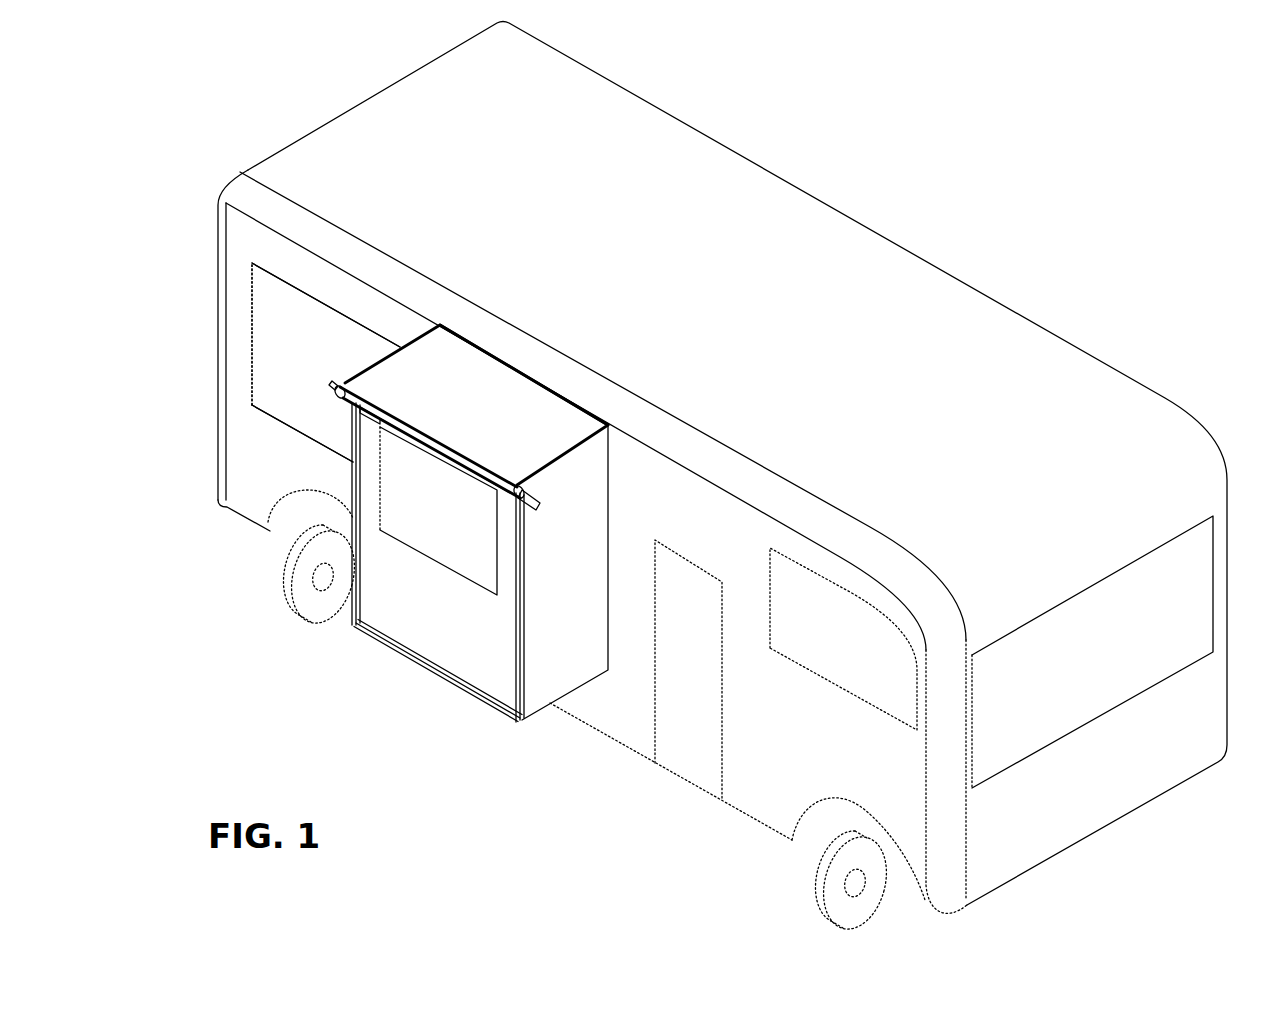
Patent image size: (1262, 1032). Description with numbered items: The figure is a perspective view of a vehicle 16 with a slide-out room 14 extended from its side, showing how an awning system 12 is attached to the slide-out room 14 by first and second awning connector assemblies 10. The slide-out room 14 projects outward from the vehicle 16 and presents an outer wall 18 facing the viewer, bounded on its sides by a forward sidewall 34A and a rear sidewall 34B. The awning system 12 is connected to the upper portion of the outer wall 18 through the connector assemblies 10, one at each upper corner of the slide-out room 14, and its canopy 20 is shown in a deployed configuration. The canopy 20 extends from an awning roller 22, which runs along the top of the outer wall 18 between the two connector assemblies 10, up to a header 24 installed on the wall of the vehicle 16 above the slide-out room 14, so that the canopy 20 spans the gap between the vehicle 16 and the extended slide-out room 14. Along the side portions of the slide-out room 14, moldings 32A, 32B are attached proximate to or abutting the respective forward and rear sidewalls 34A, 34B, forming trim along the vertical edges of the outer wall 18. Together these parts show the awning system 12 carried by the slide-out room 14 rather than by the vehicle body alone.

The awning connector assembly 10 is at (438, 369).
The awning system 12 is at (318, 396).
The slide-out room 14 is at (477, 569).
The vehicle 16 is at (968, 317).
The outer wall 18 is at (438, 530).
The canopy 20 is at (410, 366).
The awning roller 22 is at (485, 472).
The header 24 is at (607, 420).
The molding 32A is at (527, 636).
The molding 32B is at (357, 533).
The forward sidewall 34A is at (555, 573).
The rear sidewall 34B is at (344, 446).